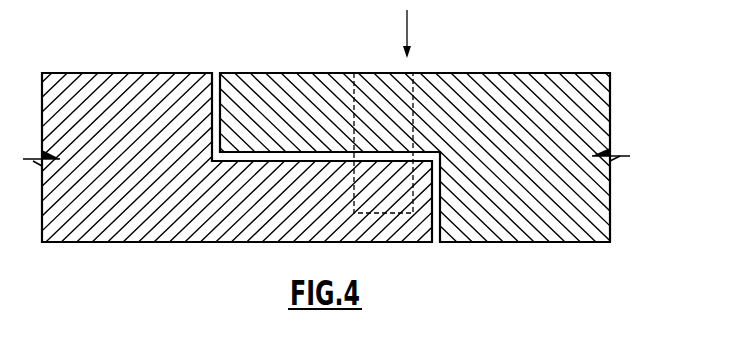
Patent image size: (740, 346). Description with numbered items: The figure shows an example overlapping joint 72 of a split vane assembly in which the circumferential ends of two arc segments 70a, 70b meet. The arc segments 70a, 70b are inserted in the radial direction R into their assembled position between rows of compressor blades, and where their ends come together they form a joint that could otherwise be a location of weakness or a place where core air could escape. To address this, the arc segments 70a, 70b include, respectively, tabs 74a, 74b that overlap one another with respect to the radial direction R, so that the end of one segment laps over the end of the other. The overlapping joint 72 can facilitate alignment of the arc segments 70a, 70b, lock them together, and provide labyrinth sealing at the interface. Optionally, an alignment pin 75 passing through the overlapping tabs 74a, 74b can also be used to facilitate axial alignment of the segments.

The arc segment 70a is at (113, 243).
The arc segment 70b is at (537, 243).
The overlapping joint 72 is at (370, 161).
The tab 74a is at (394, 243).
The tab 74b is at (302, 72).
The alignment pin 75 is at (413, 129).
The radial direction R is at (407, 26).